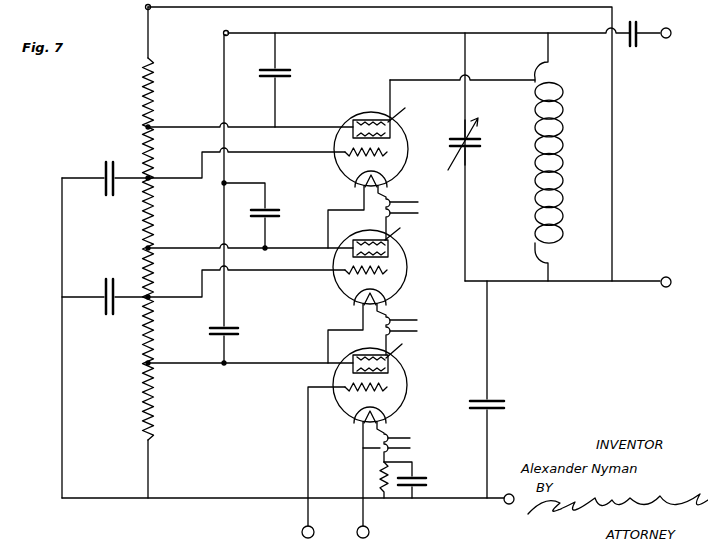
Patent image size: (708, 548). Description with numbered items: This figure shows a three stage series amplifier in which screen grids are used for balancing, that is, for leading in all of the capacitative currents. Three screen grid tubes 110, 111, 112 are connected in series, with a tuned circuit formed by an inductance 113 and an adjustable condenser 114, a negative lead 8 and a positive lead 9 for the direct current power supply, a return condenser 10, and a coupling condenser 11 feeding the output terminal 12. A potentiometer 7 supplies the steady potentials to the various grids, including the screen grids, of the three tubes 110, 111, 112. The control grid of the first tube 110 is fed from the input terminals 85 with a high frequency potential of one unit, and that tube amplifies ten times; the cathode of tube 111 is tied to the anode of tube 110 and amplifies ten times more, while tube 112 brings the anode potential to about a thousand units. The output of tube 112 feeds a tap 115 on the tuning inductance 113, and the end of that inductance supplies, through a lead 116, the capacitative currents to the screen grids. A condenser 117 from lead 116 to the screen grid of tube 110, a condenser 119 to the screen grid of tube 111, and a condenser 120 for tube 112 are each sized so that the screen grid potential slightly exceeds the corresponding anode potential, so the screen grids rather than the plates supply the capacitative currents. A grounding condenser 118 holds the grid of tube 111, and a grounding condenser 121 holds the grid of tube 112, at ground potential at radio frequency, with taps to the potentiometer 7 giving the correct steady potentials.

The potentiometer 7 is at (141, 75).
The negative lead 8 is at (512, 486).
The positive lead 9 is at (670, 272).
The return condenser 10 is at (490, 398).
The coupling condenser 11 is at (647, 17).
The output terminal 12 is at (677, 36).
The input terminals 85 is at (335, 463).
The screen grid tube 110 is at (405, 389).
The screen grid tube 111 is at (407, 271).
The screen grid tube 112 is at (407, 153).
The inductance 113 is at (536, 212).
The adjustable condenser 114 is at (461, 134).
The tap 115 is at (507, 70).
The lead 116 is at (242, 30).
The condenser 117 is at (228, 340).
The grounding condenser 118 is at (105, 300).
The condenser 119 is at (271, 222).
The condenser 120 is at (280, 80).
The grounding condenser 121 is at (105, 183).